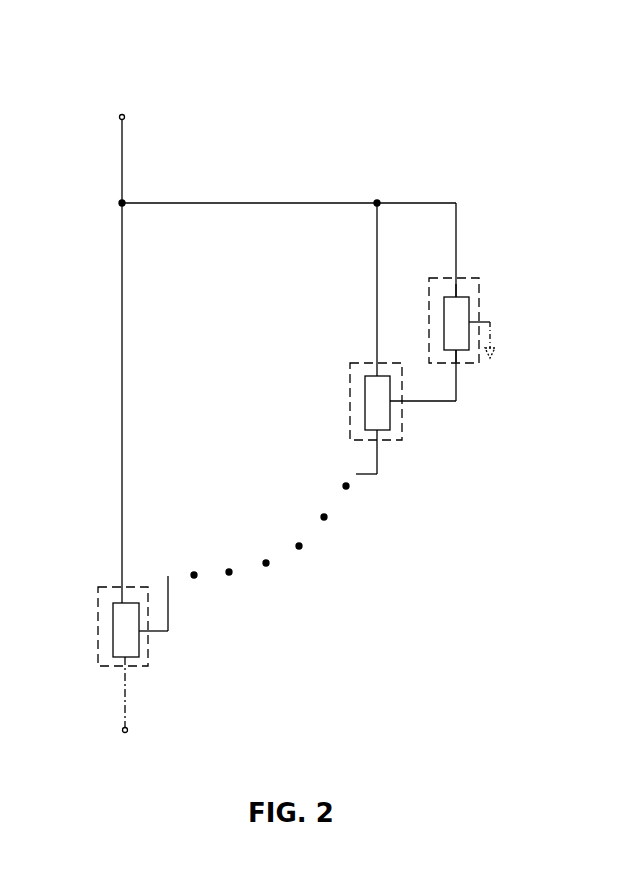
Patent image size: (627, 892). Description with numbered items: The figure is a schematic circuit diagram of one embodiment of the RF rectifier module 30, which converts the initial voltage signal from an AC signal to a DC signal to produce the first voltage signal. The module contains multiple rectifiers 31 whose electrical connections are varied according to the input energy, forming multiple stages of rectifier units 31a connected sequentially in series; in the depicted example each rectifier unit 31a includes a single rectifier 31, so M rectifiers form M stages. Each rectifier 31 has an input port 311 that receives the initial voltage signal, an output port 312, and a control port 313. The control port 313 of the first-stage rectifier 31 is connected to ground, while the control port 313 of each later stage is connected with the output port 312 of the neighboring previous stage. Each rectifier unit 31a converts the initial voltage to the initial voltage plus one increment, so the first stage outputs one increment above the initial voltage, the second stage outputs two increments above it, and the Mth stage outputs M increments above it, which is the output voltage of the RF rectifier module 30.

The RF rectifier module 30 is at (325, 50).
The rectifier 31 is at (444, 333).
The rectifier unit 31a is at (458, 274).
The input port 311 is at (457, 288).
The output port 312 is at (457, 356).
The control port 313 is at (492, 321).